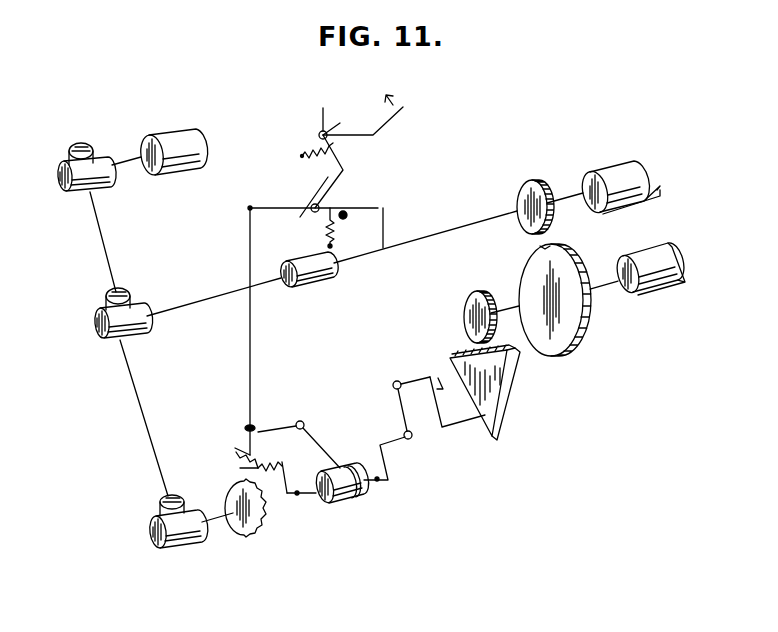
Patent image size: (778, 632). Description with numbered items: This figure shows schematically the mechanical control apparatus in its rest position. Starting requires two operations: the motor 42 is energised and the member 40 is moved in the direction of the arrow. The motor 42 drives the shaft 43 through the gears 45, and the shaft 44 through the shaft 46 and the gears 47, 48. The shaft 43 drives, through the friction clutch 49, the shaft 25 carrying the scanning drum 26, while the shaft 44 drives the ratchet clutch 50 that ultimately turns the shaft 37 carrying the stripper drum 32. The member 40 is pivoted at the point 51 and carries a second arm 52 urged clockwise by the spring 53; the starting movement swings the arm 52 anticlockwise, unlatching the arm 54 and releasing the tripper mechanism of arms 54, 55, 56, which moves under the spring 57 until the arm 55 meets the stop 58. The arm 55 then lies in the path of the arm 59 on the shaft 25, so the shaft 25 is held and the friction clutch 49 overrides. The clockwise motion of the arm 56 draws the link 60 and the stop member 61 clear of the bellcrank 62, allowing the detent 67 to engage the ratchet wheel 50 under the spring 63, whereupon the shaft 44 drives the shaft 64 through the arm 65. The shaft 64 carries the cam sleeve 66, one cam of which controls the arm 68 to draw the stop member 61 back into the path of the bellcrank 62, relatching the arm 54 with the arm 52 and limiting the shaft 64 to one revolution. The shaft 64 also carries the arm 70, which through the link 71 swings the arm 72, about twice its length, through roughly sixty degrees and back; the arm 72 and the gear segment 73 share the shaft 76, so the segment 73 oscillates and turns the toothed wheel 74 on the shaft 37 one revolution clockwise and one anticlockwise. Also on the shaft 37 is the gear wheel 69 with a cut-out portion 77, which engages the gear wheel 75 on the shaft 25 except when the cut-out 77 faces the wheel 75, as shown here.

The shaft 25 is at (442, 231).
The scanning drum 26 is at (635, 163).
The stripper drum 32 is at (675, 290).
The shaft 37 is at (600, 293).
The member 40 is at (378, 115).
The motor 42 is at (178, 168).
The shaft 43 is at (203, 298).
The shaft 44 is at (210, 518).
The gears 45 is at (82, 191).
The shaft 46 is at (100, 240).
The gears 47 is at (121, 336).
The gears 48 is at (161, 515).
The friction clutch 49 is at (307, 280).
The ratchet clutch 50 is at (231, 483).
The pivot point 51 is at (324, 112).
The second arm 52 is at (337, 157).
The spring 53 is at (307, 147).
The arm 54 is at (311, 206).
The arm 55 is at (343, 210).
The arm 56 is at (265, 208).
The spring 57 is at (322, 233).
The stop 58 is at (347, 220).
The arm 59 is at (387, 208).
The link 60 is at (250, 344).
The stop member 61 is at (242, 452).
The bellcrank 62 is at (229, 452).
The spring 63 is at (262, 460).
The shaft 64 is at (307, 494).
The arm 65 is at (287, 482).
The cam sleeve 66 is at (352, 502).
The detent 67 is at (262, 480).
The arm 68 is at (323, 450).
The gear wheel 69 is at (587, 338).
The arm 70 is at (386, 458).
The link 71 is at (395, 400).
The arm 72 is at (438, 378).
The gear segment 73 is at (517, 383).
The toothed wheel 74 is at (470, 318).
The gear wheel 75 is at (525, 205).
The shaft 76 is at (467, 425).
The cut-out portion 77 is at (540, 249).